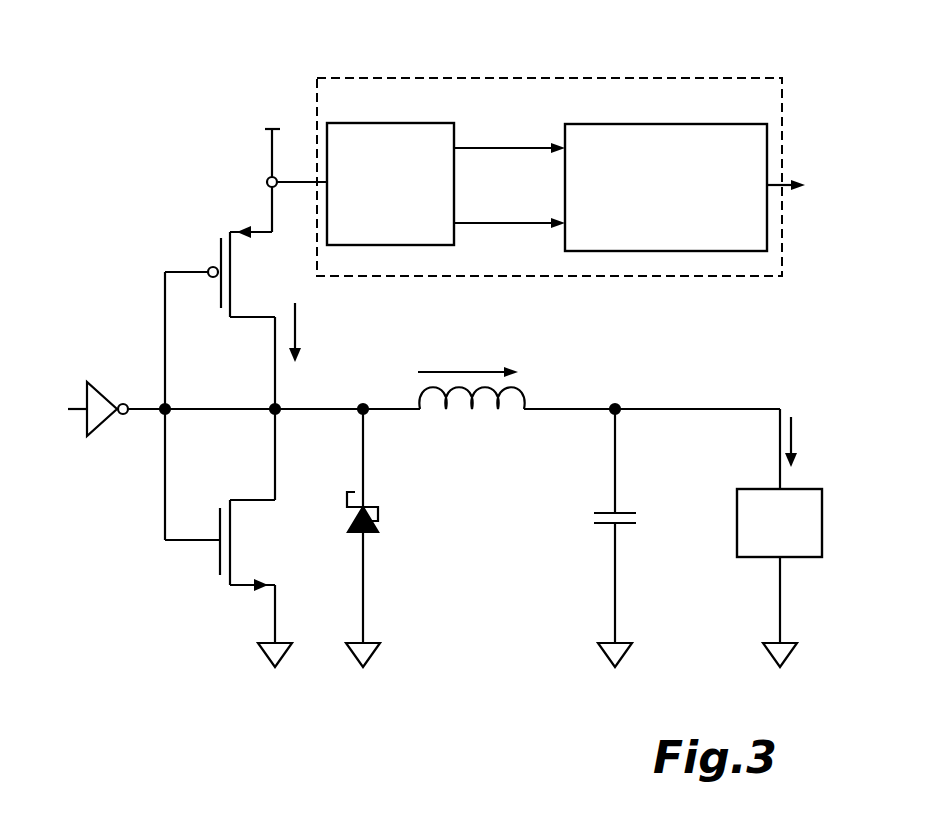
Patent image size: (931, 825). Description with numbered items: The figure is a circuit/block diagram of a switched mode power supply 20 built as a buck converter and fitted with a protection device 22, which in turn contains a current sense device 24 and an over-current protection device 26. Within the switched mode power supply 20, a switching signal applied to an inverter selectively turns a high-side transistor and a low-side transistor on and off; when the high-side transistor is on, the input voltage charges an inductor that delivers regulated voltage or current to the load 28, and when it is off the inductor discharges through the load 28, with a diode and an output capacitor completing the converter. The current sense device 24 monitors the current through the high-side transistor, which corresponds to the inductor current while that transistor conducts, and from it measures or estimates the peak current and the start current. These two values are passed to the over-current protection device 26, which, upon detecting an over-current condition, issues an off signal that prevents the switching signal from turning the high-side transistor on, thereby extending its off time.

The switched mode power supply 20 is at (150, 128).
The protection device 22 is at (618, 78).
The current sense device 24 is at (362, 123).
The over-current protection device 26 is at (637, 124).
The load 28 is at (822, 530).